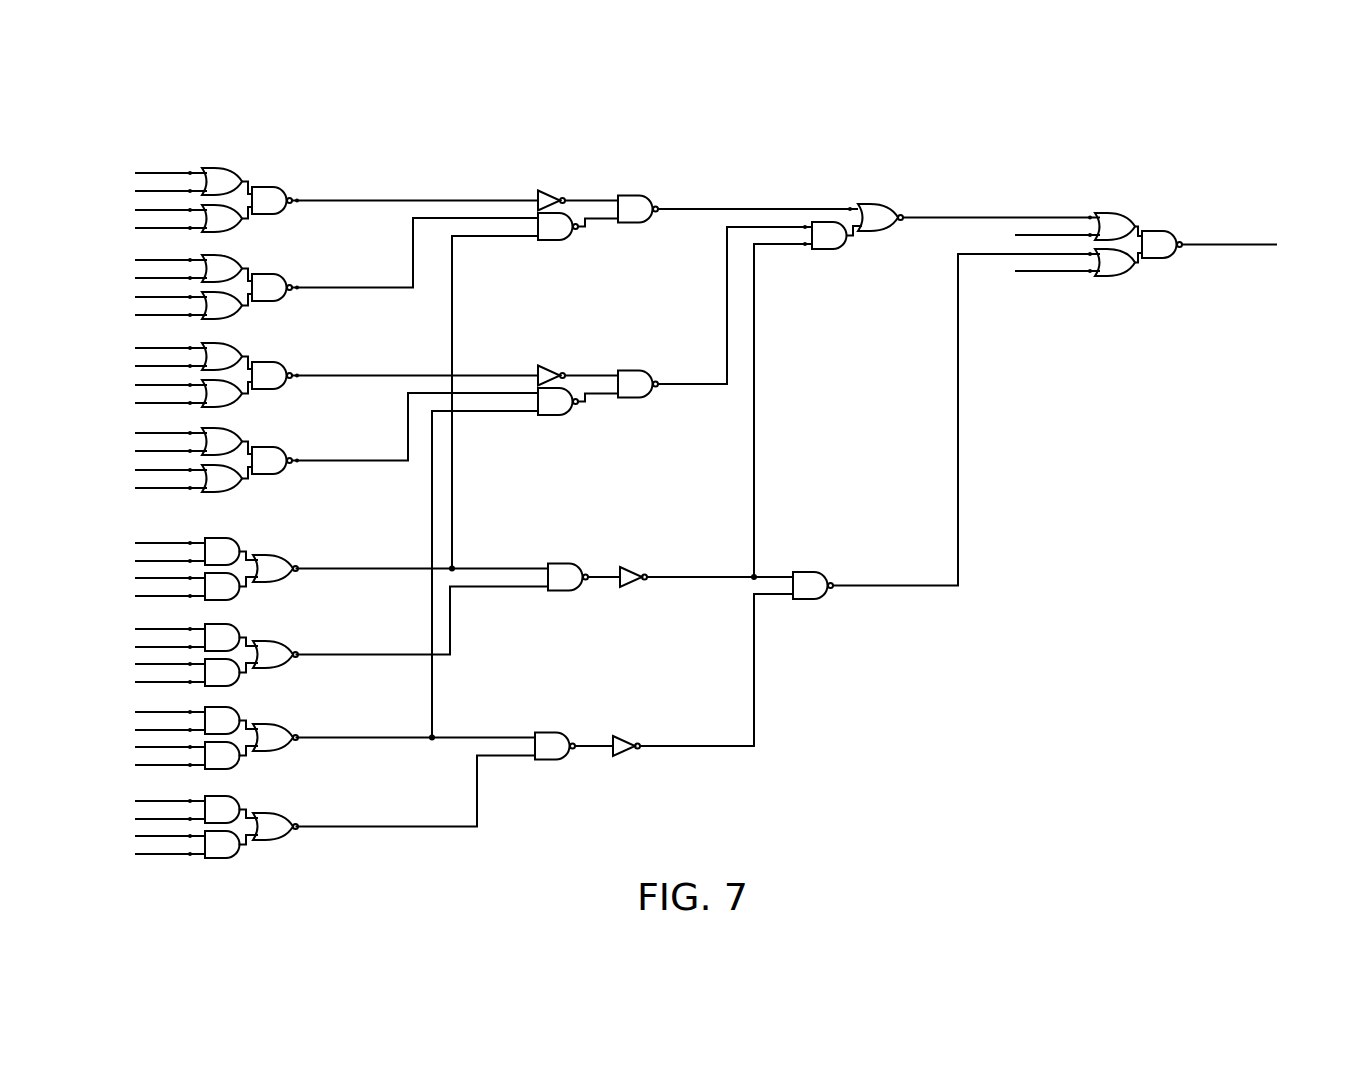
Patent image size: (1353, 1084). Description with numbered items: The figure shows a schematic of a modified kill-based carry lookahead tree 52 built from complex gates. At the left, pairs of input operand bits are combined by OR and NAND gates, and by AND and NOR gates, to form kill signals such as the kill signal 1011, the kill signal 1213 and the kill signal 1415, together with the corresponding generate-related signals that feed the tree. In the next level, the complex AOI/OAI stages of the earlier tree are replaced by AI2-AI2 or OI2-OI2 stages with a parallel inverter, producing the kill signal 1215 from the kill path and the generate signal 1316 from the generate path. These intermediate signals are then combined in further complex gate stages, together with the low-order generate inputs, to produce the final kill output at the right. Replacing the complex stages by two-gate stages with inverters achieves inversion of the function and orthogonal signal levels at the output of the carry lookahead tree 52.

The carry lookahead tree 52 is at (706, 482).
The k1011 kill signal 1011 is at (415, 253).
The k1213 kill signal 1213 is at (415, 366).
The k1415 kill signal 1415 is at (415, 427).
The k1215 kill signal 1215 is at (735, 305).
The g1316 generate signal 1316 is at (716, 670).